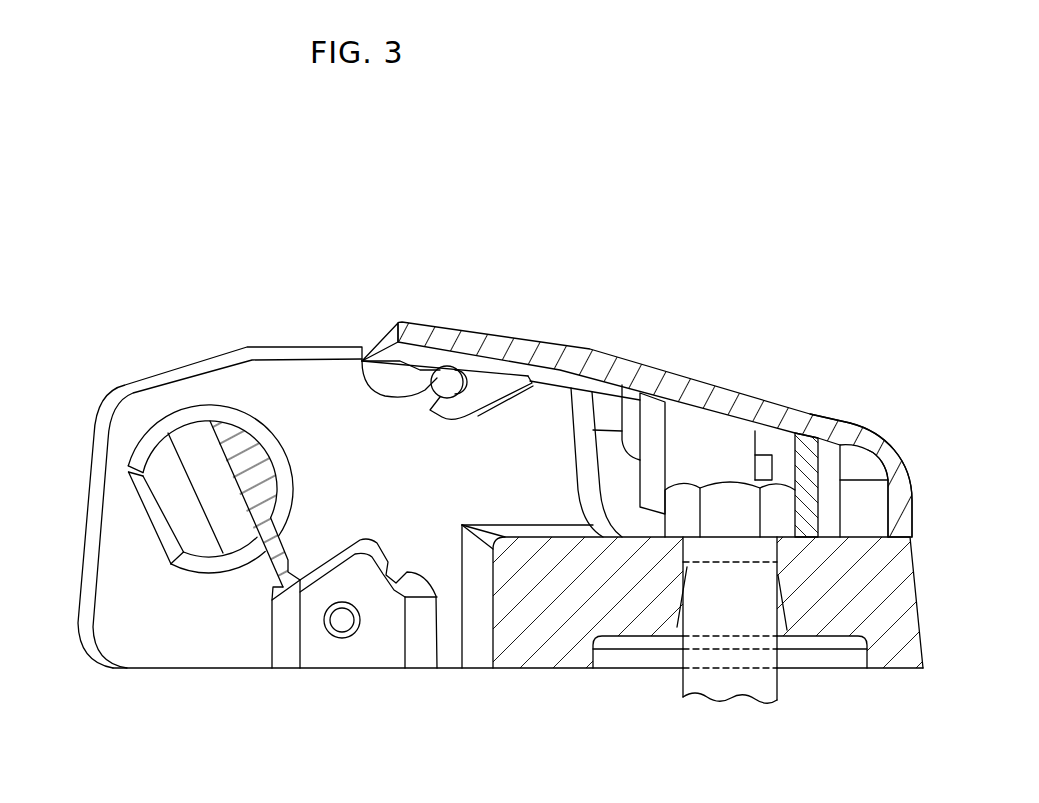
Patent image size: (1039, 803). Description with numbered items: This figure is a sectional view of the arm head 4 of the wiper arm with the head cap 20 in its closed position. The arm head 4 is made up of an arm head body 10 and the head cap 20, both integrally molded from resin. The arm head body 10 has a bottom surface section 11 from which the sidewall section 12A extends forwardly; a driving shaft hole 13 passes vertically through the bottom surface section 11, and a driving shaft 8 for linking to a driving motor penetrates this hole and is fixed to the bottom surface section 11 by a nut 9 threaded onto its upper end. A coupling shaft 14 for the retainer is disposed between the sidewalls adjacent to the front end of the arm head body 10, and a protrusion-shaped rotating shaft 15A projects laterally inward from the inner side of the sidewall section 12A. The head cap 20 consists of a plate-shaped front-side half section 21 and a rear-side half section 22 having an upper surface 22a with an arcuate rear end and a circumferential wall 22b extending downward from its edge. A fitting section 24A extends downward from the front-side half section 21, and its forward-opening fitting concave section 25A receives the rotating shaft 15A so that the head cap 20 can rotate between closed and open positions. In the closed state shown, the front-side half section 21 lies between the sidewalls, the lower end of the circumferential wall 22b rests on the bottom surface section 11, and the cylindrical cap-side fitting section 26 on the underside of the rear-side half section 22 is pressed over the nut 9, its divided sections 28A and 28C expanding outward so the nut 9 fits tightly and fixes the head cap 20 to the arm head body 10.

The arm head 4 is at (578, 250).
The driving shaft 8 is at (777, 682).
The nut 9 is at (740, 484).
The arm head body 10 is at (235, 349).
The bottom surface section 11 is at (922, 622).
The sidewall section 12A is at (231, 616).
The driving shaft hole 13 is at (777, 608).
The coupling shaft 14 is at (180, 420).
The rotating shaft 15A is at (362, 343).
The head cap 20 is at (726, 391).
The front-side half section 21 is at (580, 358).
The rear-side half section 22 is at (757, 397).
The upper surface 22a is at (761, 392).
The circumferential wall 22b is at (913, 497).
The fitting section 24A is at (532, 378).
The fitting concave section 25A is at (440, 367).
The cap-side fitting section 26 is at (639, 390).
The divided section 28A is at (687, 437).
The divided section 28C is at (803, 473).